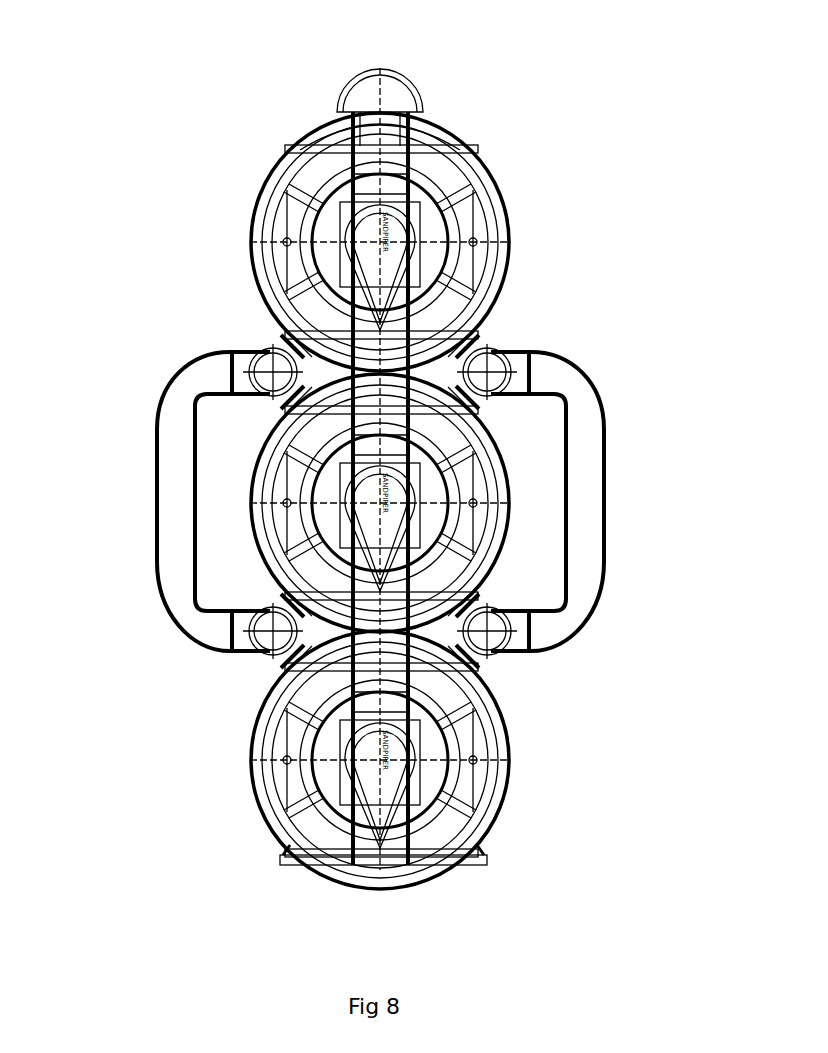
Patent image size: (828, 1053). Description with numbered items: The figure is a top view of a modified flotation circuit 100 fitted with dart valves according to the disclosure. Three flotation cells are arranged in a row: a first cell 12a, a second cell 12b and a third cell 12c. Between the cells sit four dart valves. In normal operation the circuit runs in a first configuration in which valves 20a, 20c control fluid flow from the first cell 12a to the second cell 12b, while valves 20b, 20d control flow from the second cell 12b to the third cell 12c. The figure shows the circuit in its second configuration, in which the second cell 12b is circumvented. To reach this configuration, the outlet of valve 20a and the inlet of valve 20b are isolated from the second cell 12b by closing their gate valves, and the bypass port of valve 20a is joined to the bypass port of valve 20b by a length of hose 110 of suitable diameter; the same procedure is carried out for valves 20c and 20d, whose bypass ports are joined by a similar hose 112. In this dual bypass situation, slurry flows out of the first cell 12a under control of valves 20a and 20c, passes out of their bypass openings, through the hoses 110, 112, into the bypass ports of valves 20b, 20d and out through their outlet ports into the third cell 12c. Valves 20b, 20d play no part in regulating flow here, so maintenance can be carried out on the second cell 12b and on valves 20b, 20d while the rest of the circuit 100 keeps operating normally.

The circuit 100 is at (548, 60).
The first cell 12a is at (282, 207).
The second cell 12b is at (497, 473).
The third cell 12c is at (507, 743).
The dart valve 20a is at (270, 350).
The dart valve 20b is at (263, 653).
The dart valve 20c is at (523, 362).
The dart valve 20d is at (530, 623).
The hose 110 is at (165, 452).
The hose 112 is at (593, 427).